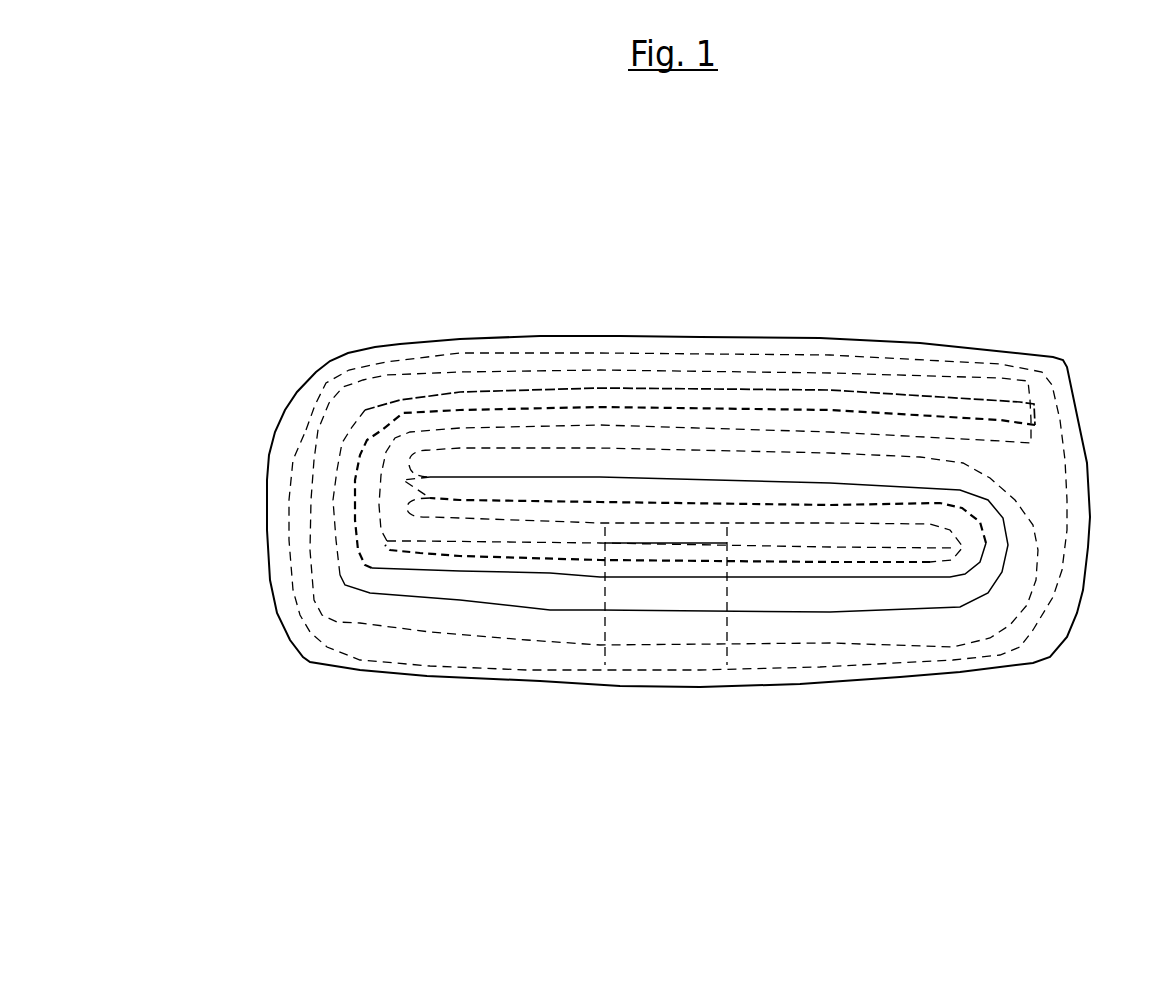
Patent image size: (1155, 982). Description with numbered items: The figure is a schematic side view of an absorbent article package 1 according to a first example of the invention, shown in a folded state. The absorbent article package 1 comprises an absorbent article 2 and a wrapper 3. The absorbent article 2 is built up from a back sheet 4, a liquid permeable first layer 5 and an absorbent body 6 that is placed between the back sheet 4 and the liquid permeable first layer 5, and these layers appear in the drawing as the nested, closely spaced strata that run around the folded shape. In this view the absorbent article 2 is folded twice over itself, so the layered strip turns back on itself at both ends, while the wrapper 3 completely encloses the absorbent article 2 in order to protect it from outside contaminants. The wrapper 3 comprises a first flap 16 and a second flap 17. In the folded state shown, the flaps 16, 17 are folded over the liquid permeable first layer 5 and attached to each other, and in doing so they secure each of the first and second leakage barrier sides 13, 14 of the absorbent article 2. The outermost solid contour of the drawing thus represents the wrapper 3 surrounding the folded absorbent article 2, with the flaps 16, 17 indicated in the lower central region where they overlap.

The absorbent article package 1 is at (634, 421).
The absorbent article 2 is at (289, 569).
The wrapper 3 is at (285, 399).
The back sheet 4 is at (344, 622).
The liquid permeable first layer 5 is at (466, 576).
The absorbent body 6 is at (410, 591).
The first leakage barrier side 13 is at (671, 708).
The second leakage barrier side 14 is at (520, 559).
The first flap 16 is at (716, 696).
The second flap 17 is at (699, 631).